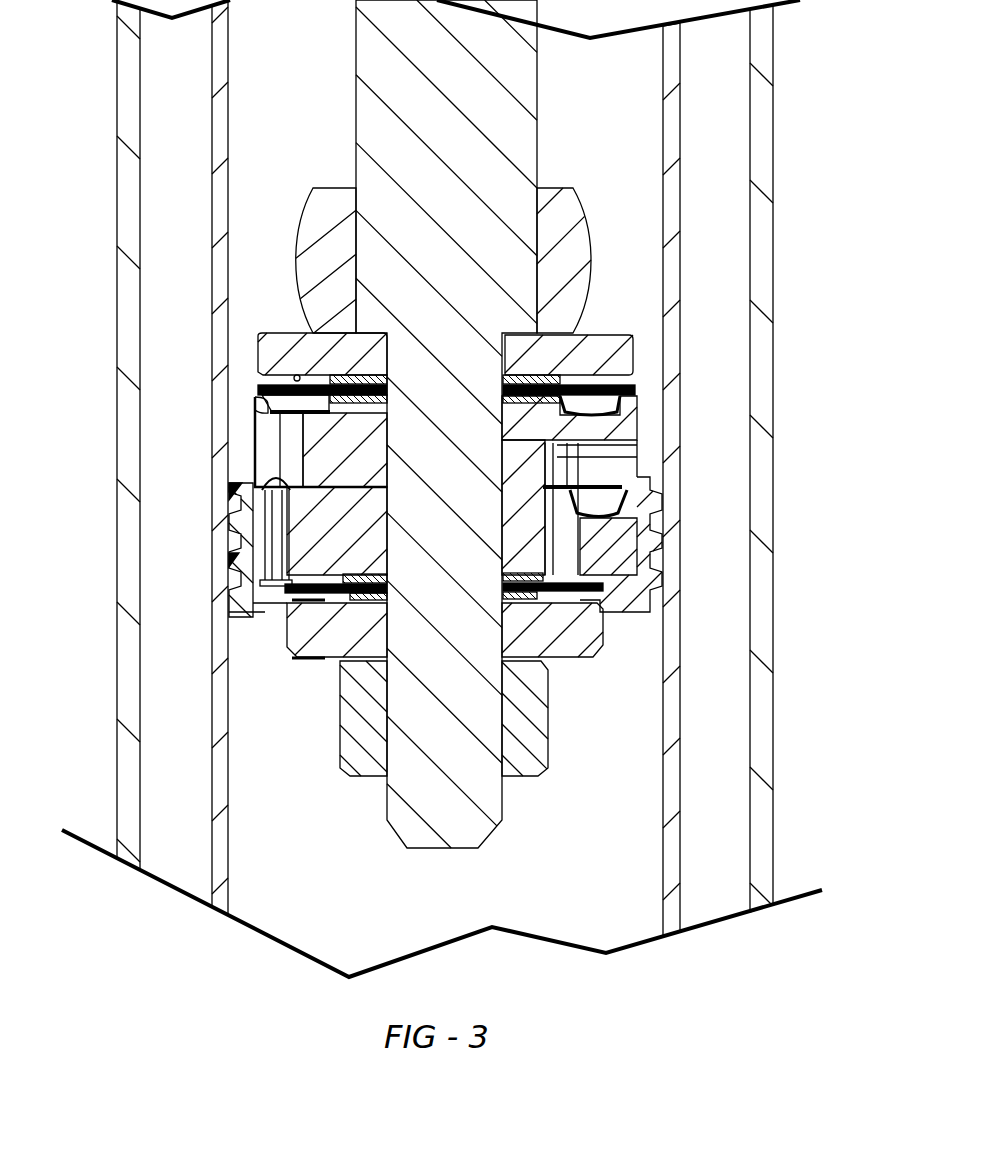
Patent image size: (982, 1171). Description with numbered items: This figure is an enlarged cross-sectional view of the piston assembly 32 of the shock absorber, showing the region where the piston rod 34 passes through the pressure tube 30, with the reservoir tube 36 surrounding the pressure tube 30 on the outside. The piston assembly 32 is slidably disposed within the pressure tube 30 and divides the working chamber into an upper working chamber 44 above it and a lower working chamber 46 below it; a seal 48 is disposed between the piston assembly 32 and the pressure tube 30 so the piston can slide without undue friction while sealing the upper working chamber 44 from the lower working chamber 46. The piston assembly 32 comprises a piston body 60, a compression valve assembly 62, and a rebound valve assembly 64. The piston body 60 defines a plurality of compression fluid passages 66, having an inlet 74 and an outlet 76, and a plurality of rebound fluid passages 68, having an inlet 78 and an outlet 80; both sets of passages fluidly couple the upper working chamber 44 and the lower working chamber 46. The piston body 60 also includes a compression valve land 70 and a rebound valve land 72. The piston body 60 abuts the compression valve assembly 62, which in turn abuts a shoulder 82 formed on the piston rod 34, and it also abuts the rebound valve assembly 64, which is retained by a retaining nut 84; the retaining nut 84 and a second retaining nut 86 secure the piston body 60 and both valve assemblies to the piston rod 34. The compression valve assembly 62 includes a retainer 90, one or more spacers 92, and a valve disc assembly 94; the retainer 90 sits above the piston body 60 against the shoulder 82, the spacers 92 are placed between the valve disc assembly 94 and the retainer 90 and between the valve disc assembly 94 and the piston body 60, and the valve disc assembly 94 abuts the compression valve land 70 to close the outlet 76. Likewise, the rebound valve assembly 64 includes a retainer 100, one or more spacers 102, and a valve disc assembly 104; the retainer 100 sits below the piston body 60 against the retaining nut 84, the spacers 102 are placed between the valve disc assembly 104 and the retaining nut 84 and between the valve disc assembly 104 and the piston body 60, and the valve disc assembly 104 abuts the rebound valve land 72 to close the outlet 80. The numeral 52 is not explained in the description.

The pressure tube 30 is at (680, 125).
The piston assembly 32 is at (267, 196).
The piston rod 34 is at (464, 144).
The reservoir tube 36 is at (773, 155).
The upper working chamber 44 is at (294, 82).
The lower working chamber 46 is at (336, 892).
The seal 48 is at (234, 483).
The reservoir chamber 52 is at (172, 150).
The piston body 60 is at (640, 418).
The compression valve assembly 62 is at (611, 295).
The rebound valve assembly 64 is at (308, 708).
The compression fluid passages 66 is at (293, 446).
The rebound fluid passages 68 is at (582, 482).
The compression valve land 70 is at (318, 407).
The rebound valve land 72 is at (595, 580).
The inlet 74 is at (272, 612).
The outlet 76 is at (325, 410).
The inlet 78 is at (623, 460).
The outlet 80 is at (565, 578).
The shoulder 82 is at (370, 333).
The retaining nut 84 is at (523, 718).
The retaining nut 86 is at (562, 202).
The retainer 90 is at (297, 348).
The spacers 92 is at (365, 372).
The valve disc assembly 94 is at (282, 378).
The retainer 100 is at (575, 628).
The spacers 102 is at (362, 575).
The valve disc assembly 104 is at (627, 613).